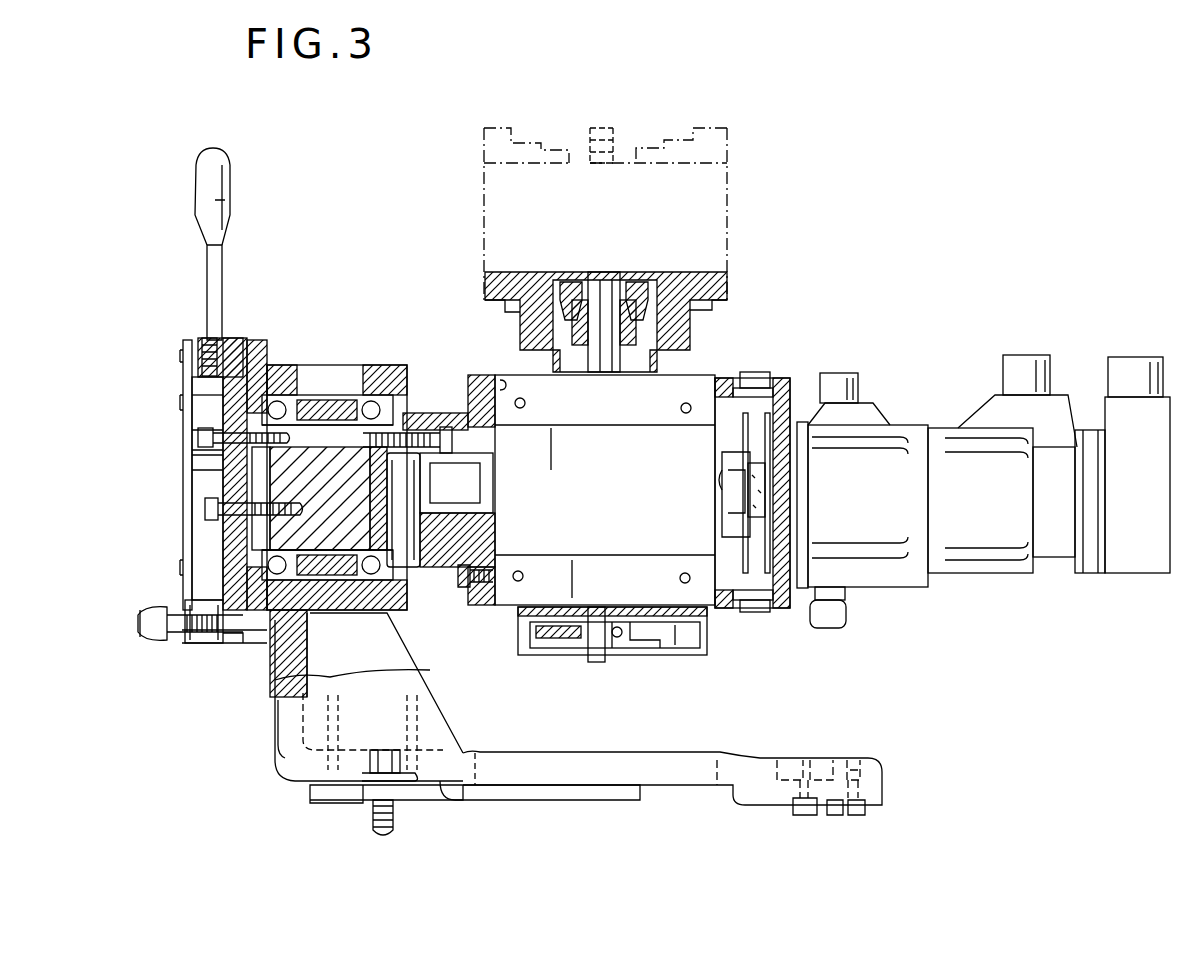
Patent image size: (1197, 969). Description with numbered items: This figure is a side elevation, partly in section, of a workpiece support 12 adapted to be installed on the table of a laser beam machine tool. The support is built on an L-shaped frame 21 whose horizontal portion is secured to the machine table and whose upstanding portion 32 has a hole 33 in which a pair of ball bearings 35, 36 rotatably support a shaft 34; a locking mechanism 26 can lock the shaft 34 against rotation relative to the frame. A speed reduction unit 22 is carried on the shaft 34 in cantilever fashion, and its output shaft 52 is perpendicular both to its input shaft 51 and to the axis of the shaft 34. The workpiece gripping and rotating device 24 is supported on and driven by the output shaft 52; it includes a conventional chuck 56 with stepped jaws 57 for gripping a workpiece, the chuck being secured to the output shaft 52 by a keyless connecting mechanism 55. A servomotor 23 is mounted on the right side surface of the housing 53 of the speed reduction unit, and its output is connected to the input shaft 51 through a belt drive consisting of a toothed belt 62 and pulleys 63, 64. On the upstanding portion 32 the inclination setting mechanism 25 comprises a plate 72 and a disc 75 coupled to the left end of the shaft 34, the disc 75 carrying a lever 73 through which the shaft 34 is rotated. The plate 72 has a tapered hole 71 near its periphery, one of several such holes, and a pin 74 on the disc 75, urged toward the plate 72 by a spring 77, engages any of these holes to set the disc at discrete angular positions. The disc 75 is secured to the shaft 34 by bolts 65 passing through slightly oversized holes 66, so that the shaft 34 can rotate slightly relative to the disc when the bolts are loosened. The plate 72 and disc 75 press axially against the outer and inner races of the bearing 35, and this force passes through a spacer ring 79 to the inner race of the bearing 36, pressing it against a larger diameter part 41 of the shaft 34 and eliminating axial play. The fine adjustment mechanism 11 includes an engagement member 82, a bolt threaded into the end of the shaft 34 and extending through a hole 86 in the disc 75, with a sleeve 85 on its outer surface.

The fine adjustment mechanism 11 is at (195, 448).
The workpiece support 12 is at (803, 218).
The frame 21 is at (296, 782).
The speed reduction unit 22 is at (695, 372).
The servomotor 23 is at (905, 420).
The workpiece gripping and rotating device 24 is at (470, 298).
The inclination setting mechanism 25 is at (245, 340).
The locking mechanism 26 is at (345, 395).
The upstanding portion 32 is at (405, 683).
The hole 33 is at (340, 405).
The shaft 34 is at (330, 575).
The ball bearing 35 is at (300, 395).
The ball bearing 36 is at (410, 365).
The larger diameter part 41 is at (400, 567).
The input shaft 51 is at (715, 495).
The output shaft 52 is at (604, 272).
The housing 53 is at (505, 375).
The keyless connecting mechanism 55 is at (560, 278).
The chuck 56 is at (732, 178).
The stepped jaws 57 is at (522, 128).
The toothed belt 62 is at (752, 413).
The pulley 63 is at (740, 540).
The pulley 64 is at (740, 428).
The bolts 65 is at (200, 545).
The holes 66 is at (215, 508).
The hole 71 is at (232, 643).
The plate 72 is at (275, 365).
The lever 73 is at (215, 145).
The pin 74 is at (172, 632).
The disc 75 is at (200, 340).
The spring 77 is at (205, 645).
The spacer ring 79 is at (300, 410).
The engagement member 82 is at (208, 432).
The sleeve 85 is at (205, 405).
The hole 86 is at (200, 482).